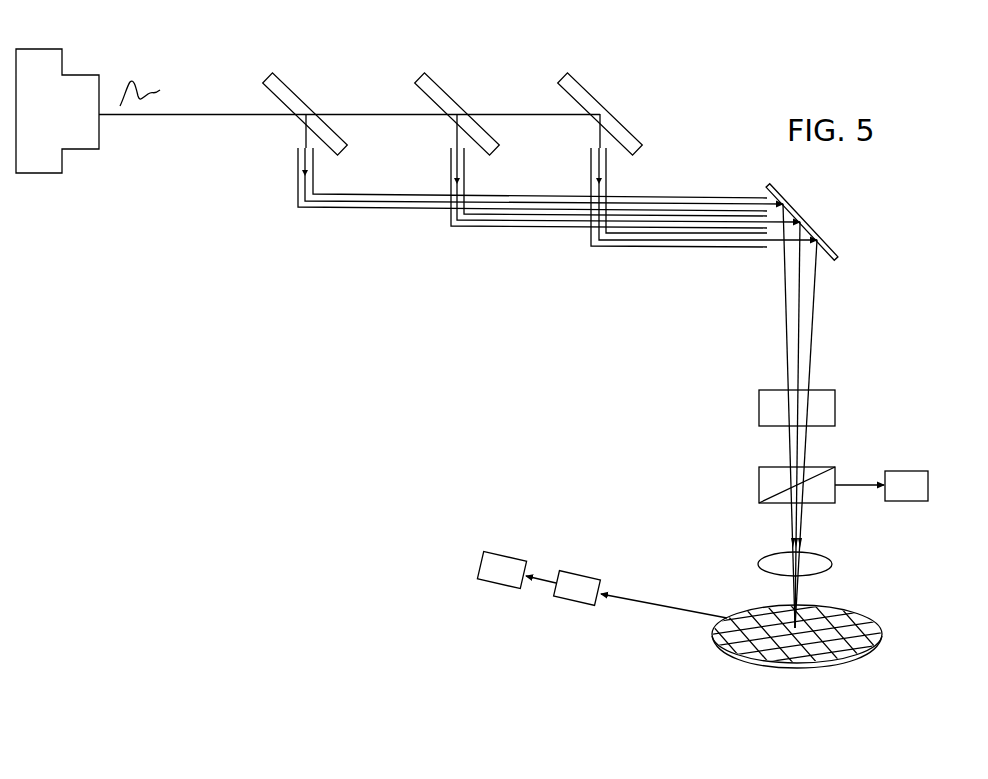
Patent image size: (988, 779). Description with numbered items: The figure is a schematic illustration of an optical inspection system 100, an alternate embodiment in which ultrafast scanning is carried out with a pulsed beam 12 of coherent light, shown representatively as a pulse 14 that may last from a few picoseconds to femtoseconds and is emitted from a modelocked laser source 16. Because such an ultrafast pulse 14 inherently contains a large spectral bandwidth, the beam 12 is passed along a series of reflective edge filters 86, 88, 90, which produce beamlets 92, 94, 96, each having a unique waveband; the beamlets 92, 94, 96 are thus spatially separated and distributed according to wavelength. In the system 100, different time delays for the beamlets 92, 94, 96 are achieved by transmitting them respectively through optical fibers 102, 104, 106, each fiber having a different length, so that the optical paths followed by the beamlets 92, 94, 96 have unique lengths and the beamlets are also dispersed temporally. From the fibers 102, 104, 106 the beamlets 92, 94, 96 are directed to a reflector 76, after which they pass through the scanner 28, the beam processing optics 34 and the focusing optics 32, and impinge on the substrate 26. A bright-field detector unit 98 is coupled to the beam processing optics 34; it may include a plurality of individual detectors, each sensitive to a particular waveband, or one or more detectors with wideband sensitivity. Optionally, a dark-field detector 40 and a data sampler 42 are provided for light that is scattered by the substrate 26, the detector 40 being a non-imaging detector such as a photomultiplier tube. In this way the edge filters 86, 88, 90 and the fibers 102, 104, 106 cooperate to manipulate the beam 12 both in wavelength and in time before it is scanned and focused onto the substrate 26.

The optical inspection system 100 is at (735, 86).
The modelocked laser source 16 is at (47, 49).
The pulsed beam 12 is at (172, 115).
The pulse 14 is at (146, 87).
The reflective edge filter 86 is at (284, 85).
The reflective edge filter 88 is at (431, 85).
The reflective edge filter 90 is at (574, 88).
The beamlet 92 is at (304, 142).
The beamlet 94 is at (455, 142).
The beamlet 96 is at (598, 146).
The optical fiber 102 is at (323, 208).
The optical fiber 104 is at (480, 227).
The optical fiber 106 is at (617, 247).
The reflector 76 is at (811, 231).
The scanner 28 is at (758, 410).
The beam processing optics 34 is at (758, 483).
The bright-field detector unit 98 is at (906, 471).
The focusing optics 32 is at (759, 564).
The substrate 26 is at (860, 618).
The dark-field detector 40 is at (577, 577).
The data sampler 42 is at (505, 561).